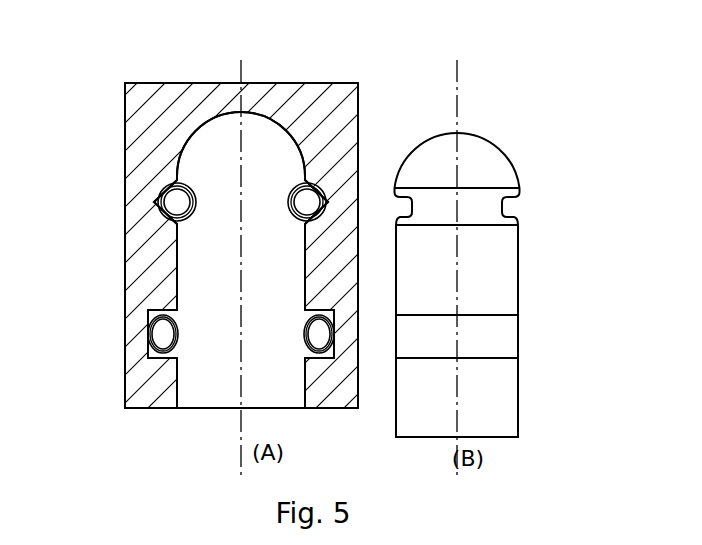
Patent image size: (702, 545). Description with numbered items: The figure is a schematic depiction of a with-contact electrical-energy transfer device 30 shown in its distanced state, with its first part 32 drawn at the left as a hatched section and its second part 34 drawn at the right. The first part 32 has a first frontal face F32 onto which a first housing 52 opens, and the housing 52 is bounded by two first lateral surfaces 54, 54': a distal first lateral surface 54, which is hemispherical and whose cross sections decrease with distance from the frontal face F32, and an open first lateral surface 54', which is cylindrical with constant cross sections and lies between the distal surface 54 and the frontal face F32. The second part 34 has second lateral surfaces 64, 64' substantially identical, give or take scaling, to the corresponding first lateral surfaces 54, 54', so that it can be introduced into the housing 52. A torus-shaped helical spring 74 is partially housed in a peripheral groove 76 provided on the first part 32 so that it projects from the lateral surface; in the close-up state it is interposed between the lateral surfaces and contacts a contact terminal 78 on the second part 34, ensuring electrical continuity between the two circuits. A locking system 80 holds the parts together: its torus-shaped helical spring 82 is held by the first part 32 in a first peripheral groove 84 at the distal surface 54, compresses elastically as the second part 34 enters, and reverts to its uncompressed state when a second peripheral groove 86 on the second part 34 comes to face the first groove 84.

The electrical-energy transfer device 30 is at (367, 110).
The first part 32 is at (140, 103).
The second part 34 is at (473, 133).
The first housing 52 is at (215, 269).
The distal first lateral surface 54 is at (190, 144).
The open first lateral surface 54' is at (134, 267).
The second lateral surface 64 is at (471, 145).
The stud shaft 64' is at (480, 331).
The torus-shaped helical spring 74 is at (162, 332).
The peripheral groove 76 is at (150, 356).
The contact terminal 78 is at (410, 343).
The locking system 80 is at (150, 218).
The torus-shaped helical spring 82 is at (324, 181).
The first peripheral groove 84 is at (157, 193).
The second peripheral groove 86 is at (504, 204).
The first frontal face F32 is at (158, 410).